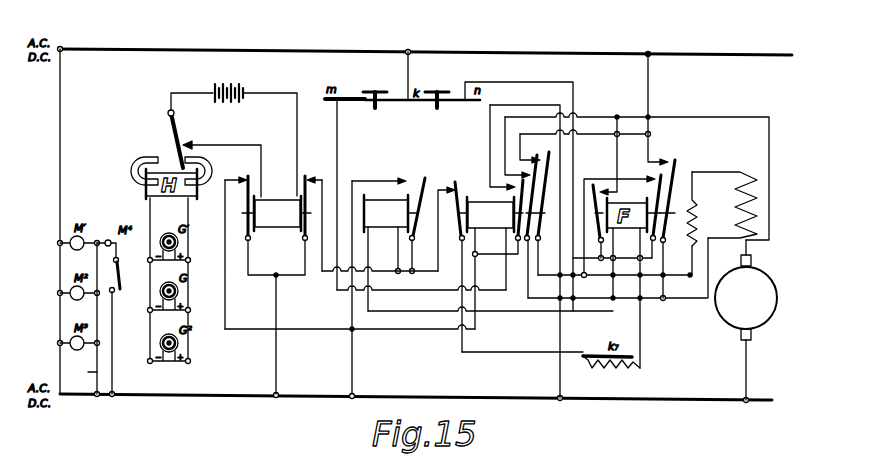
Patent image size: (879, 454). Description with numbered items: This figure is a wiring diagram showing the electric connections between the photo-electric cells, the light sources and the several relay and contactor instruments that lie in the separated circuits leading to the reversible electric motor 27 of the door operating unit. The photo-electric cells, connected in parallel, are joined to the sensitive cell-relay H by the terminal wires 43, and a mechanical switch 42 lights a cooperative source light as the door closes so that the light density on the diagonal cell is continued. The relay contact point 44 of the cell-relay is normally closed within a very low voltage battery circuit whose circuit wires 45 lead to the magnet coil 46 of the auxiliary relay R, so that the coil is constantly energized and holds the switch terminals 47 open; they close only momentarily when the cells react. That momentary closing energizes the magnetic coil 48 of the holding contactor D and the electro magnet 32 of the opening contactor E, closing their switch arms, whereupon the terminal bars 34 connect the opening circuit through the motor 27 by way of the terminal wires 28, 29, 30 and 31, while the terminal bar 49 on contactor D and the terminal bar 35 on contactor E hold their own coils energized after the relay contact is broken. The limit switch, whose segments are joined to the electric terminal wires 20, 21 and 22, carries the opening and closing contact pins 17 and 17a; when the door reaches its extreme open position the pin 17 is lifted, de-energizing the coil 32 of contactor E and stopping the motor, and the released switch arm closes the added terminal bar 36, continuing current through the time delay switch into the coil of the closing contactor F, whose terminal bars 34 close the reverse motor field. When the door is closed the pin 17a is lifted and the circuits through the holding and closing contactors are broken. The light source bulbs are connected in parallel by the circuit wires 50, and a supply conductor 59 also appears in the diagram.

The supply conductor 59 is at (60, 183).
The mechanical switch 42 is at (119, 279).
The terminal wires 43 is at (170, 279).
The relay contact point 44 is at (179, 136).
The circuit wires 45 is at (172, 93).
The magnet coil 46 is at (277, 207).
The switch terminals 47 is at (274, 208).
The magnetic coil 48 is at (386, 208).
The terminal bar 49 is at (426, 187).
The electric terminal wire 20 is at (406, 76).
The opening contact pin 17 is at (375, 92).
The closing contact pin 17a is at (437, 92).
The electric terminal wire 21 is at (339, 141).
The electric terminal wire 22 is at (524, 80).
The electro magnet 32 is at (490, 222).
The added terminal bar 36 is at (458, 186).
The terminal bar 35 is at (517, 193).
The terminal bar 34 is at (534, 211).
The circuit wires 50 is at (697, 218).
The terminal wire 28 is at (687, 261).
The terminal wire 29 is at (704, 268).
The electric motor 27 is at (768, 303).
The terminal wire 30 is at (739, 253).
The terminal wire 31 is at (740, 364).